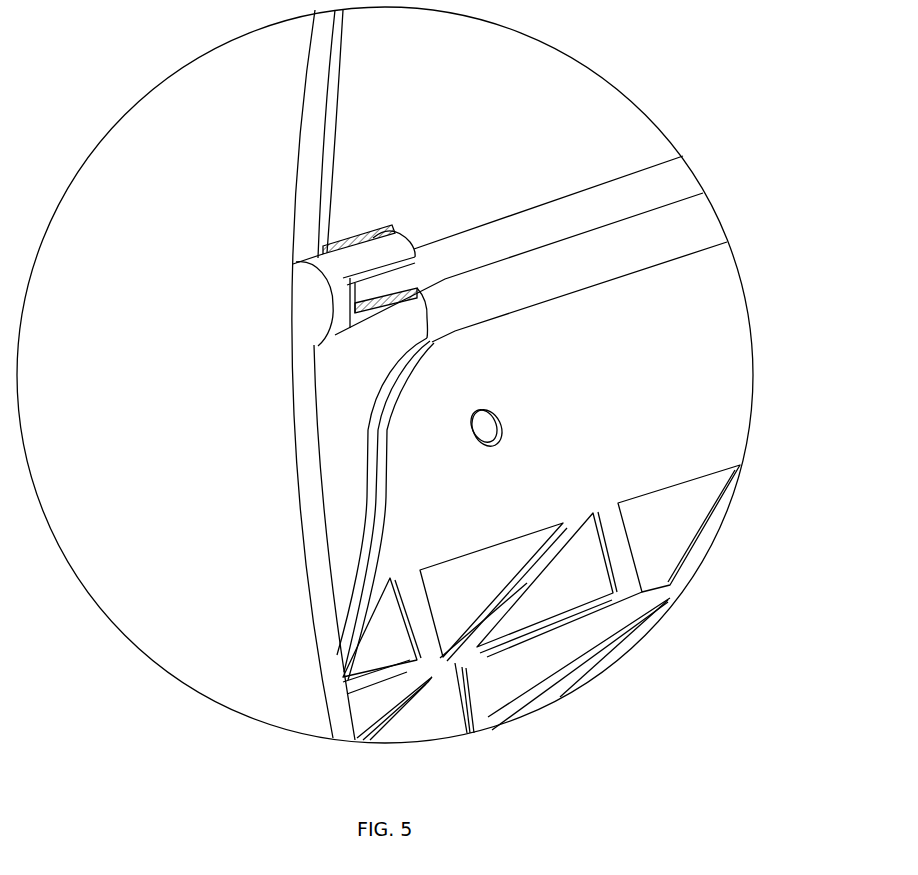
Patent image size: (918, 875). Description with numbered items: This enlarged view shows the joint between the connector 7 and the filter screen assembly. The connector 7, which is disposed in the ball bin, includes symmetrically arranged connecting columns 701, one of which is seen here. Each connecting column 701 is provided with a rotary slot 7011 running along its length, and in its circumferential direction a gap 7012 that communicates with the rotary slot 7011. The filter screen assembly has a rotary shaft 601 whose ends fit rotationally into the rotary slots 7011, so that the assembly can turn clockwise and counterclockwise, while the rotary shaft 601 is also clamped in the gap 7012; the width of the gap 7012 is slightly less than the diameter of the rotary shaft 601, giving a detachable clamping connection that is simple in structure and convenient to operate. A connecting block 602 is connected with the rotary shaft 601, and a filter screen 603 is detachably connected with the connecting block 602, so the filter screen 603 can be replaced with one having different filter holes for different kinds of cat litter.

The connector 7 is at (277, 285).
The connecting column 701 is at (308, 302).
The rotary slot 7011 is at (350, 305).
The gap 7012 is at (362, 323).
The rotary shaft 601 is at (572, 217).
The connecting block 602 is at (373, 497).
The filter screen 603 is at (672, 443).